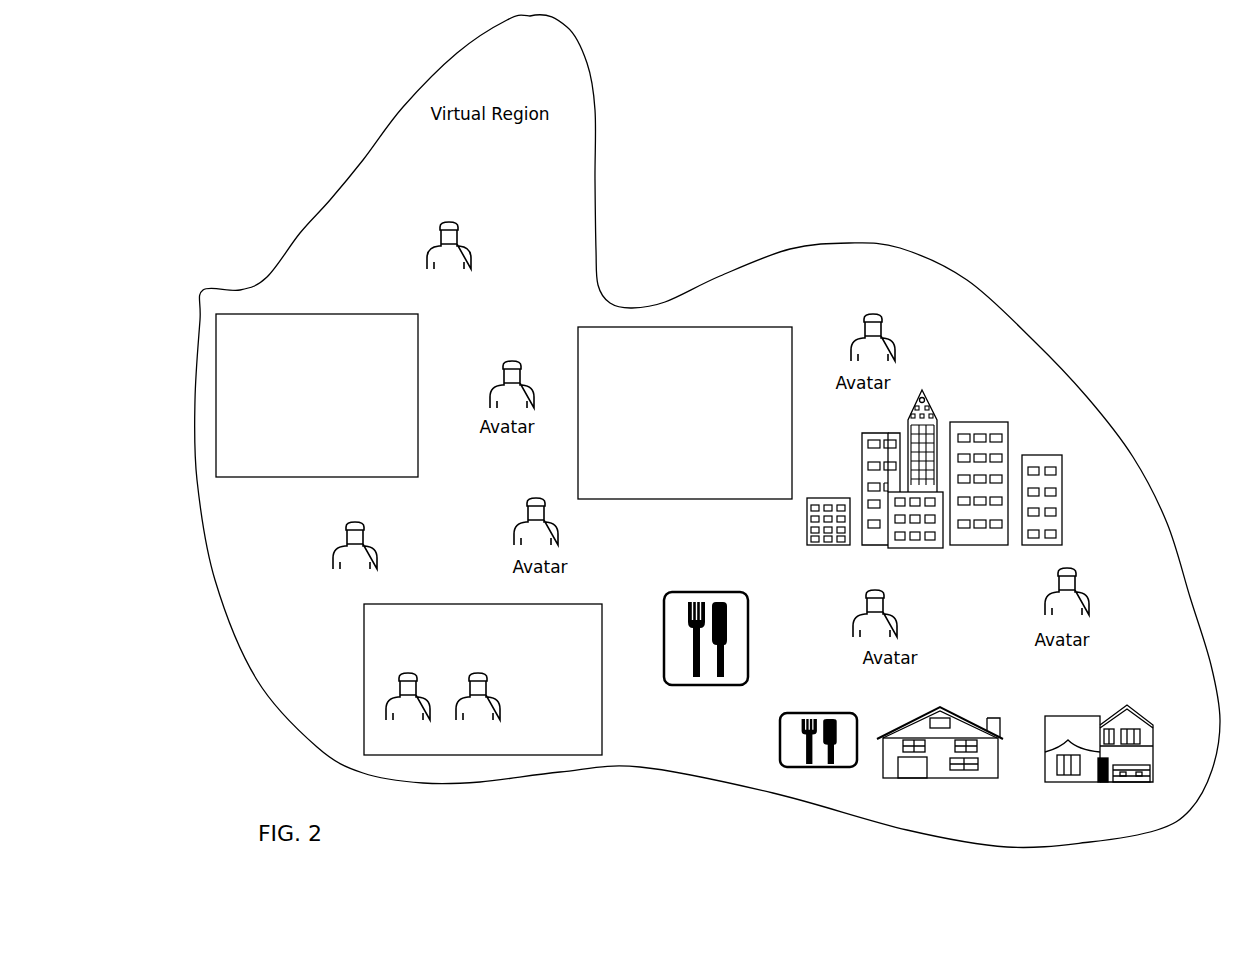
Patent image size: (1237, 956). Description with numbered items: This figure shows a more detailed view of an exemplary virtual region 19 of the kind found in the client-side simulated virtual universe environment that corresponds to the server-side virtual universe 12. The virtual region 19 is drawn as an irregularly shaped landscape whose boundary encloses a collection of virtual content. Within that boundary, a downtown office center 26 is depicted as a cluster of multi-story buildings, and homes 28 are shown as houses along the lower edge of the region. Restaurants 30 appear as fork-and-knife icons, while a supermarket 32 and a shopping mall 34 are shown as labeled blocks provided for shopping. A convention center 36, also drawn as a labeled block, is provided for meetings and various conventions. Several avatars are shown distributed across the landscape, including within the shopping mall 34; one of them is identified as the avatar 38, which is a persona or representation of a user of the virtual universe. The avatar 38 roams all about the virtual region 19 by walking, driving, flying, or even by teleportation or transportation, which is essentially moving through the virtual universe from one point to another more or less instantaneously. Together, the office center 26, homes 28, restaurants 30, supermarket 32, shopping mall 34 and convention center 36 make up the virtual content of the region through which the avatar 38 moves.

The server-side virtual universe 12 is at (945, 82).
The virtual region 19 is at (594, 80).
The downtown office center 26 is at (1002, 413).
The homes 28 is at (948, 778).
The restaurants 30 is at (749, 642).
The supermarket 32 is at (317, 314).
The shopping mall 34 is at (364, 680).
The convention center 36 is at (675, 499).
The avatar 38 is at (473, 243).